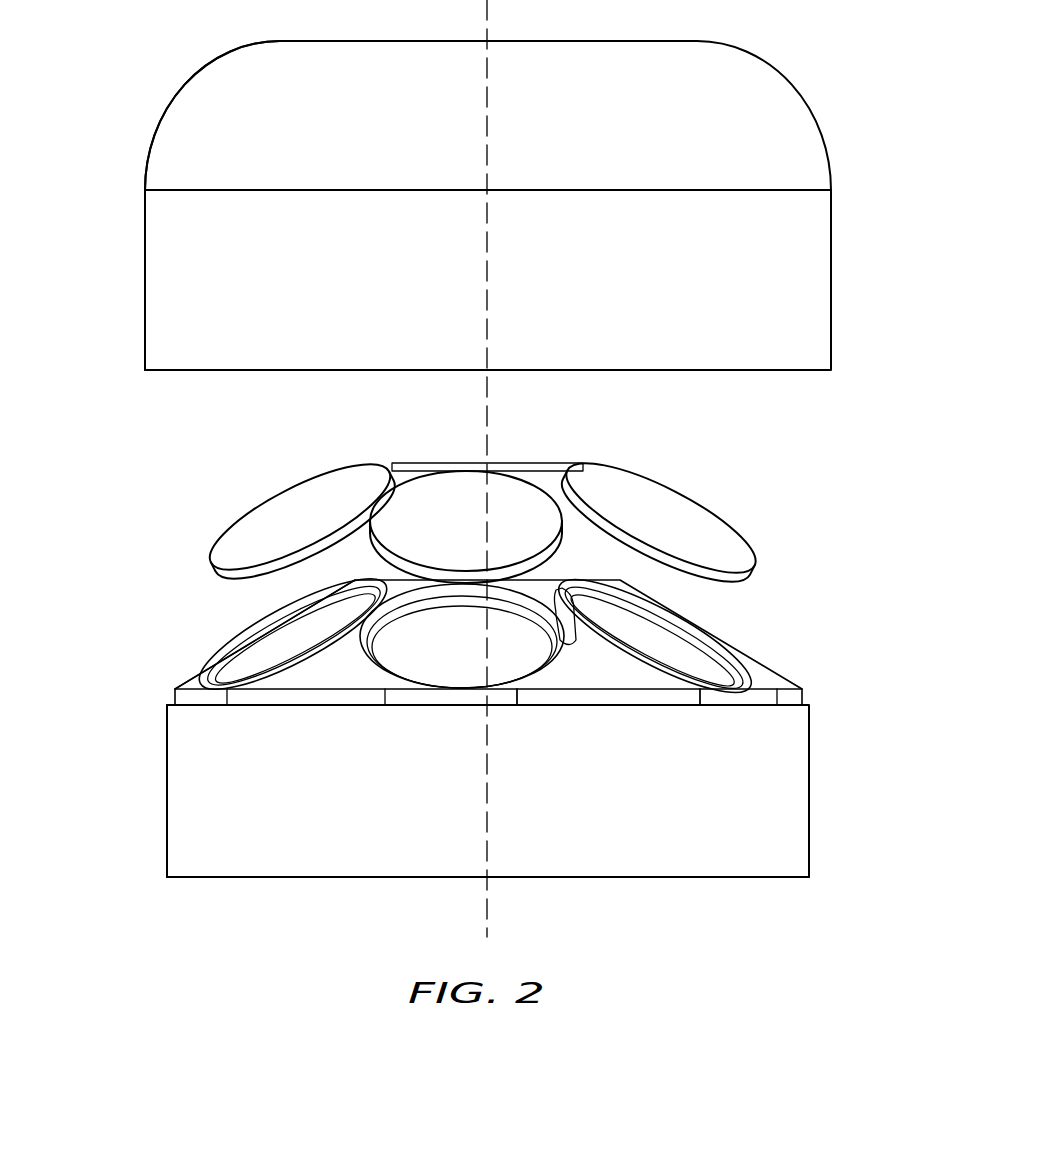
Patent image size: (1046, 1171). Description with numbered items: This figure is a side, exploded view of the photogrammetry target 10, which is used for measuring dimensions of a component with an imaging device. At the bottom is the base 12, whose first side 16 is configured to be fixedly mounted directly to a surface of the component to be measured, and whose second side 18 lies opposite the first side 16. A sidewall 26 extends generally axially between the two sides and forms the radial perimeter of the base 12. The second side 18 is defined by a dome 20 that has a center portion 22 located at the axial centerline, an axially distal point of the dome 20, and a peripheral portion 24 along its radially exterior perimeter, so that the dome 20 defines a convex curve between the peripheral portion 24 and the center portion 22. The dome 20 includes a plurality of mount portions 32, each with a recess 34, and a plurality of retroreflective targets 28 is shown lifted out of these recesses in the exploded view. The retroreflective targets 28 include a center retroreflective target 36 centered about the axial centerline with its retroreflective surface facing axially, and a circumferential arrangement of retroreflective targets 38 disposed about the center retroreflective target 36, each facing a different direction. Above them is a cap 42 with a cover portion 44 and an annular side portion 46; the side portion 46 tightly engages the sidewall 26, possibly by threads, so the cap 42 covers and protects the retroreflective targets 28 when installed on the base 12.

The photogrammetry target 10 is at (888, 316).
The base 12 is at (828, 775).
The first side 16 is at (768, 894).
The second side 18 is at (802, 672).
The dome 20 is at (230, 648).
The center portion 22 is at (606, 566).
The peripheral portion 24 is at (173, 688).
The sidewall 26 is at (165, 770).
The plurality of retroreflective targets 28 is at (764, 537).
The mount portions 32 is at (716, 698).
The recess 34 is at (456, 648).
The center retroreflective target 36 is at (524, 456).
The circumferential arrangement of retroreflective targets 38 is at (272, 508).
The cap 42 is at (808, 76).
The cover portion 44 is at (190, 82).
The annular side portion 46 is at (145, 265).